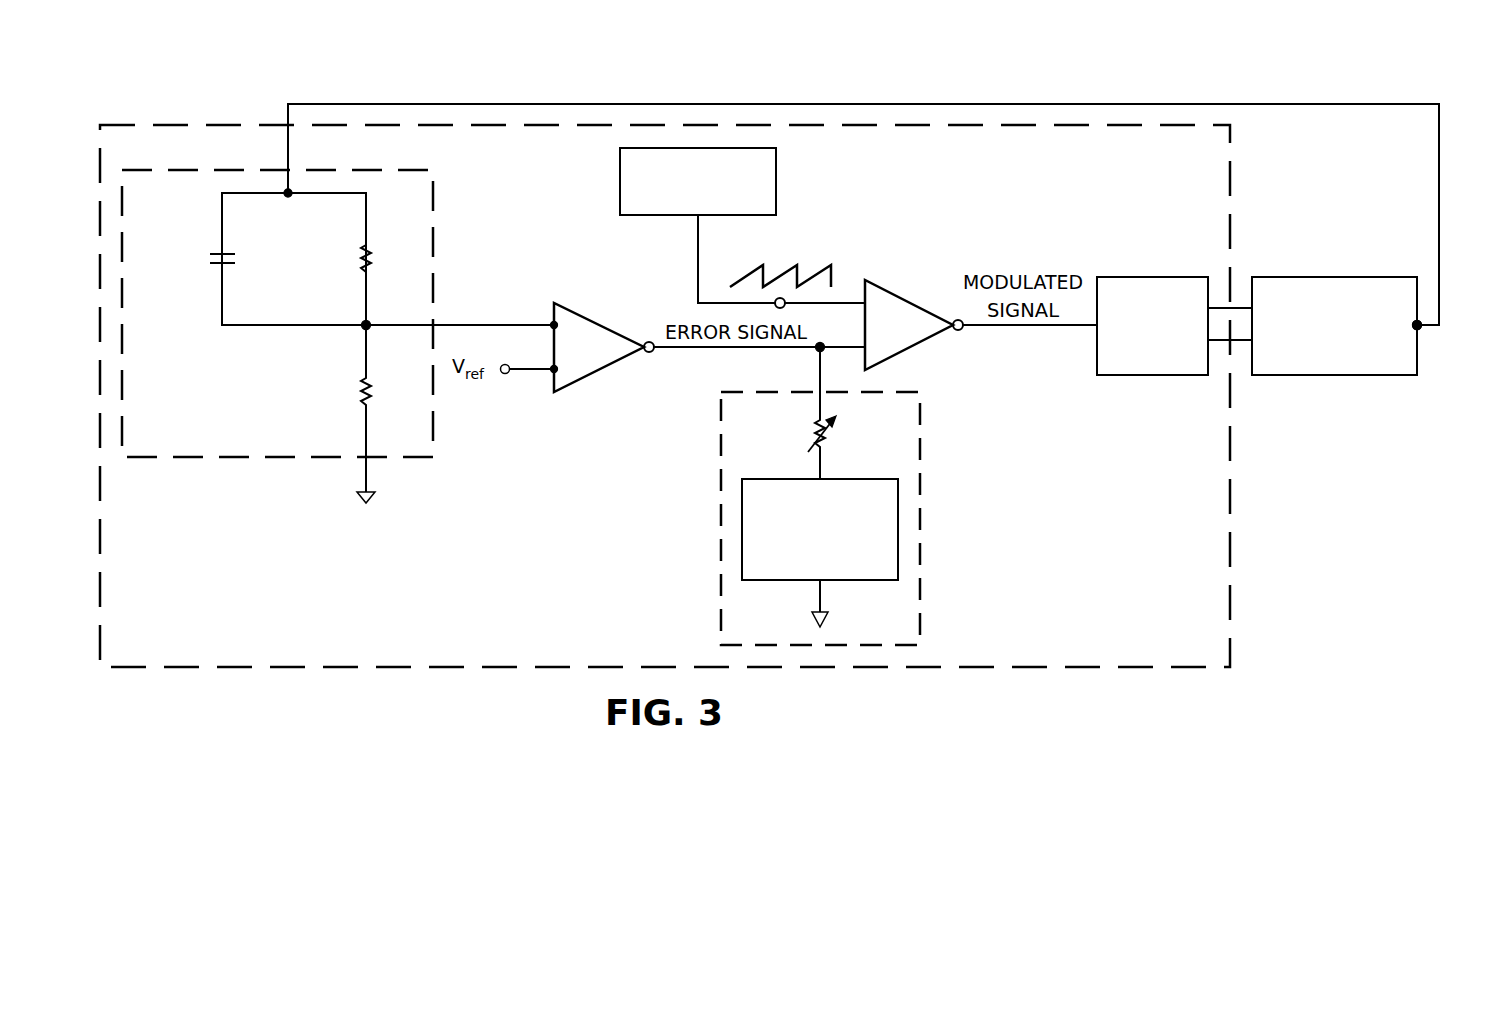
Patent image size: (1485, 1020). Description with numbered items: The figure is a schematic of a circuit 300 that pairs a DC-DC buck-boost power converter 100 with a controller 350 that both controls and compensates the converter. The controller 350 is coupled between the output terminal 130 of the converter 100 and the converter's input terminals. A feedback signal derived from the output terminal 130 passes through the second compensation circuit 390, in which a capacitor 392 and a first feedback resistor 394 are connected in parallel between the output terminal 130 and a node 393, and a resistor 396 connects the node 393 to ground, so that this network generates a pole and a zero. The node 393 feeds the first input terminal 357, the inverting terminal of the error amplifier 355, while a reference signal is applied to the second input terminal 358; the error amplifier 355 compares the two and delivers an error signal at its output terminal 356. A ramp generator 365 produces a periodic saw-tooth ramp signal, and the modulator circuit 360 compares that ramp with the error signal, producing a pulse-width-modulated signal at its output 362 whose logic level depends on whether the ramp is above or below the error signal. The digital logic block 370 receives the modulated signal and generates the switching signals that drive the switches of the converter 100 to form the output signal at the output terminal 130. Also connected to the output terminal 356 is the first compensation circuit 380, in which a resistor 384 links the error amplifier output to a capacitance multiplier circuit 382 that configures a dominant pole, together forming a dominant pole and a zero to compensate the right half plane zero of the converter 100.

The circuit 300 is at (1108, 80).
The controller 350 is at (383, 602).
The second compensation circuit 390 is at (338, 349).
The capacitor CF 392 is at (212, 257).
The resistor RF1 394 is at (358, 256).
The node 393 is at (360, 320).
The resistor 396 is at (349, 414).
The error amplifier 355 is at (684, 376).
The first input terminal 357 is at (550, 317).
The second input terminal 358 is at (547, 378).
The output terminal 356 is at (651, 353).
The ramp generator 365 is at (620, 180).
The modulator circuit 360 is at (979, 289).
The output 362 is at (959, 331).
The digital logic block 370 is at (1152, 277).
The power converter 100 is at (1335, 277).
The output terminal 130 is at (1421, 330).
The first compensation circuit 380 is at (864, 496).
The resistor 384 is at (833, 442).
The capacitance multiplier circuit 382 is at (855, 580).